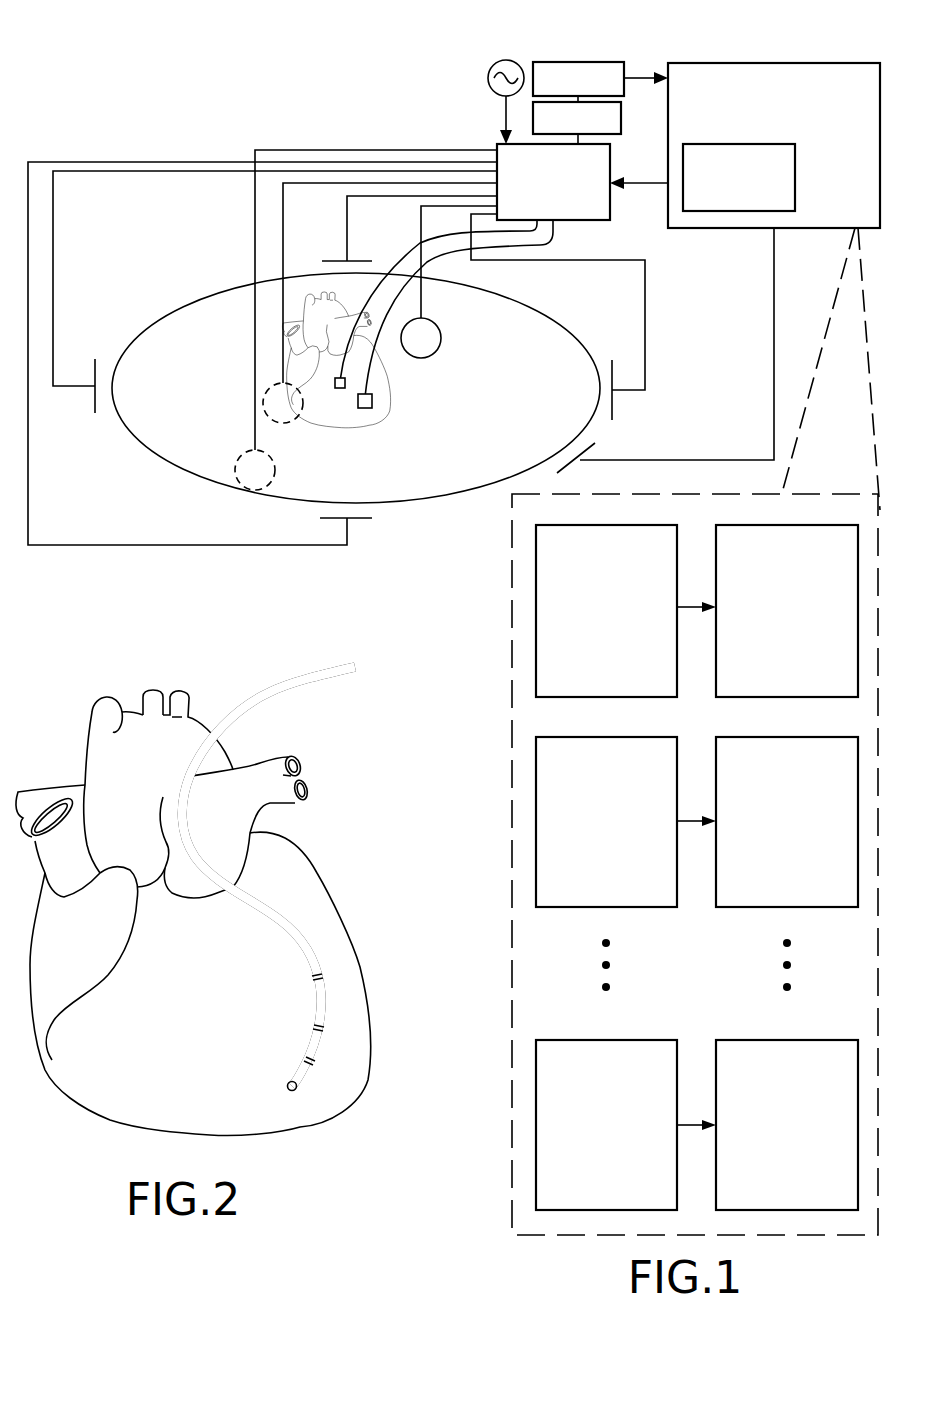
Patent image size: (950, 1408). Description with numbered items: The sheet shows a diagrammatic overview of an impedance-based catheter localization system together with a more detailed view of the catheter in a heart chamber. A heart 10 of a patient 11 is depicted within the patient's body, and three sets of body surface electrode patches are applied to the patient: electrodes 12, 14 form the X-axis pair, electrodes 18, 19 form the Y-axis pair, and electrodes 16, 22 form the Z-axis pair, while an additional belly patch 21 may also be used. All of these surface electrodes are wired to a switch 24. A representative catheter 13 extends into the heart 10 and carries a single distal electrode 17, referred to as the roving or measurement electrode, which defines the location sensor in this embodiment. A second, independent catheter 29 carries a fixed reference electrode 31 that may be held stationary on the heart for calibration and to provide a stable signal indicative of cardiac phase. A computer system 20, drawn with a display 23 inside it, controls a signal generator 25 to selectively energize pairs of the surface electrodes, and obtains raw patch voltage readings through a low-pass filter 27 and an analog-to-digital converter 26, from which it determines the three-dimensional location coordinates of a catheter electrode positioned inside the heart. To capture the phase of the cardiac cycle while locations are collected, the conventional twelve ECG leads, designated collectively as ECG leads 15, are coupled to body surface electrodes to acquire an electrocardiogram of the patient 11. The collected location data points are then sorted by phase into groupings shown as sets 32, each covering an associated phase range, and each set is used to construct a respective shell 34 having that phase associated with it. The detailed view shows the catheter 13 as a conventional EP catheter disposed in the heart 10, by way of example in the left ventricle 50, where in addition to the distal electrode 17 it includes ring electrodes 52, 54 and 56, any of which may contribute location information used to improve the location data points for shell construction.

In FIG. 1, the heart 10 is at (375, 397).
In FIG. 2, the heart 10 is at (300, 857).
In FIG. 1, the patient 11 is at (531, 307).
In FIG. 1, the surface electrode 12 is at (337, 258).
In FIG. 1, the catheter 13 is at (548, 238).
In FIG. 2, the catheter 13 is at (297, 688).
In FIG. 1, the surface electrode 14 is at (348, 533).
In FIG. 1, the ECG leads 15 is at (774, 410).
In FIG. 1, the surface electrode 16 is at (421, 298).
In FIG. 1, the distal electrode 17 is at (375, 405).
In FIG. 2, the distal electrode 17 is at (293, 1097).
In FIG. 1, the surface electrode 18 is at (112, 388).
In FIG. 1, the surface electrode 19 is at (613, 410).
In FIG. 1, the computer system 20 is at (812, 211).
In FIG. 1, the belly patch 21 is at (255, 440).
In FIG. 1, the surface electrode 22 is at (283, 347).
In FIG. 1, the display 23 is at (726, 204).
In FIG. 1, the switch 24 is at (540, 206).
In FIG. 1, the signal generator 25 is at (490, 70).
In FIG. 1, the analog-to-digital converter 26 is at (586, 62).
In FIG. 1, the low-pass filter 27 is at (621, 118).
In FIG. 1, the second catheter 29 is at (382, 266).
In FIG. 1, the fixed reference electrode 31 is at (347, 384).
In FIG. 1, the set of electrode locations 32 is at (655, 525).
In FIG. 1, the shell 34 is at (795, 525).
In FIG. 2, the left ventricle 50 is at (287, 1133).
In FIG. 2, the ring electrode 52 is at (312, 1060).
In FIG. 2, the ring electrode 54 is at (327, 1027).
In FIG. 2, the ring electrode 56 is at (323, 977).